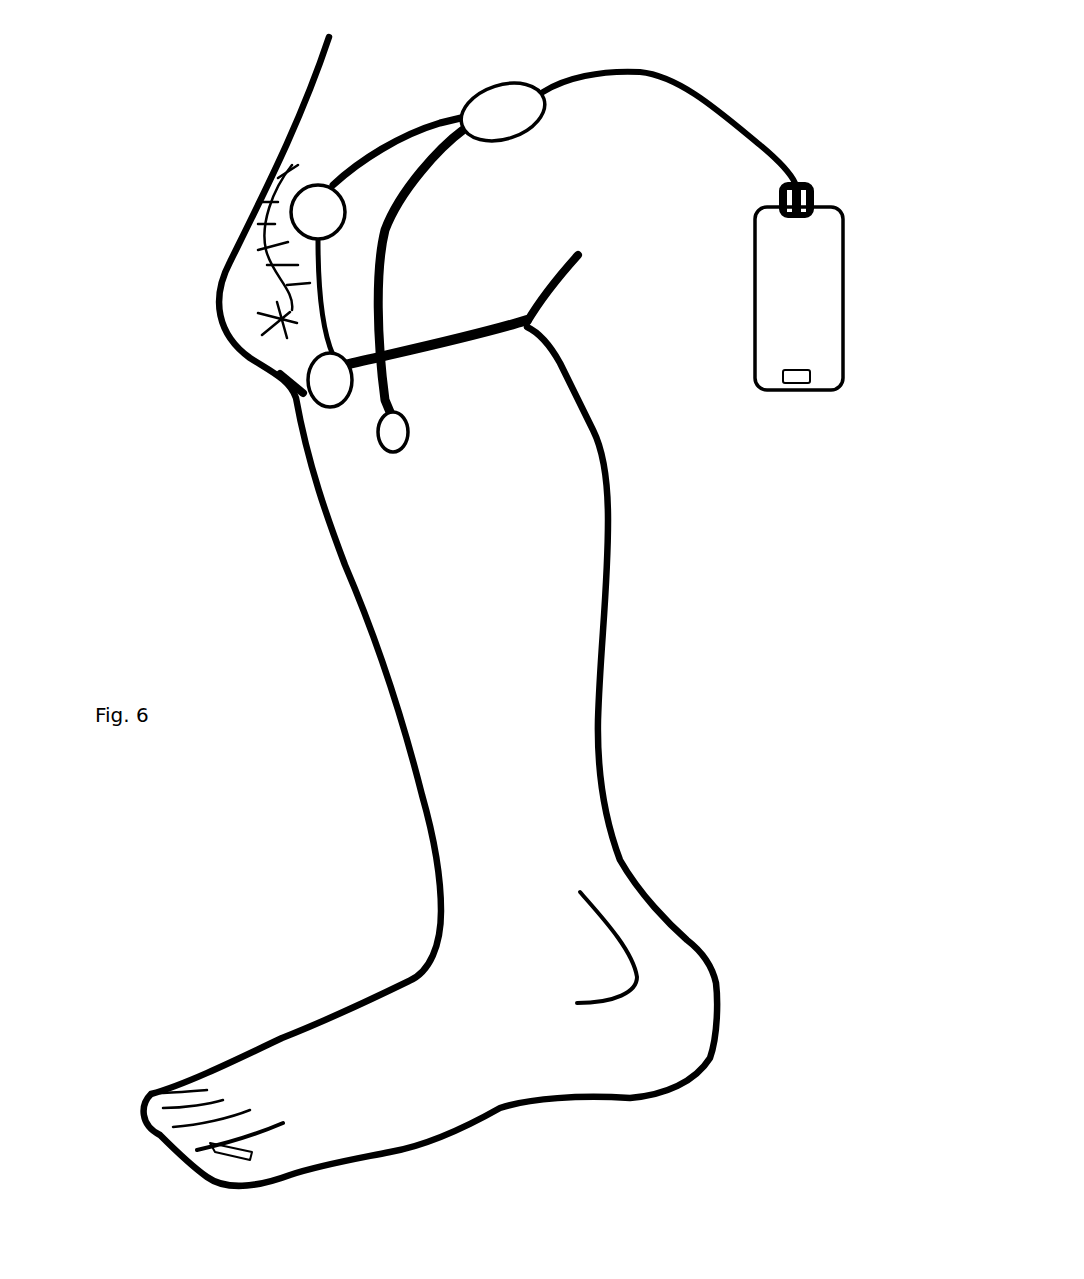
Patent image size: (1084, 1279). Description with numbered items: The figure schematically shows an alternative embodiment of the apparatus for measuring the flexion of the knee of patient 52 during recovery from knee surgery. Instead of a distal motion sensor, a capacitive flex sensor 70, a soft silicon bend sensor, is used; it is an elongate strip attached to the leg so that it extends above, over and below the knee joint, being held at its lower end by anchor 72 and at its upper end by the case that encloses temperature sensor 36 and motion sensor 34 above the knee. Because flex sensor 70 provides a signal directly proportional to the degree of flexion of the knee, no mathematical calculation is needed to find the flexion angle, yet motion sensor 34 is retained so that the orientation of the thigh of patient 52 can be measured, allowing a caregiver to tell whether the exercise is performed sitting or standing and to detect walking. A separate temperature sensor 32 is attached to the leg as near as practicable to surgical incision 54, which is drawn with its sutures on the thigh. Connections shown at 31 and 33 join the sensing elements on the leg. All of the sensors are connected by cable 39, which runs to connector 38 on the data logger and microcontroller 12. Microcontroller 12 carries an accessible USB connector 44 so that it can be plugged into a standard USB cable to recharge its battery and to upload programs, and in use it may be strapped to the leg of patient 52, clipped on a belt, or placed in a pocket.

The data logger and microcontroller 12 is at (782, 321).
The first port 31 is at (322, 374).
The temperature sensor 32 is at (320, 202).
The suction tube 33 is at (548, 323).
The motion sensor 34 is at (500, 122).
The temperature sensor 36 is at (530, 95).
The connector 38 is at (815, 193).
The cable 39 is at (663, 73).
The USB connector 44 is at (800, 378).
The patient 52 is at (565, 527).
The surgical incision 54 is at (255, 265).
The capacitive flex sensor 70 is at (395, 240).
The anchor 72 is at (380, 432).